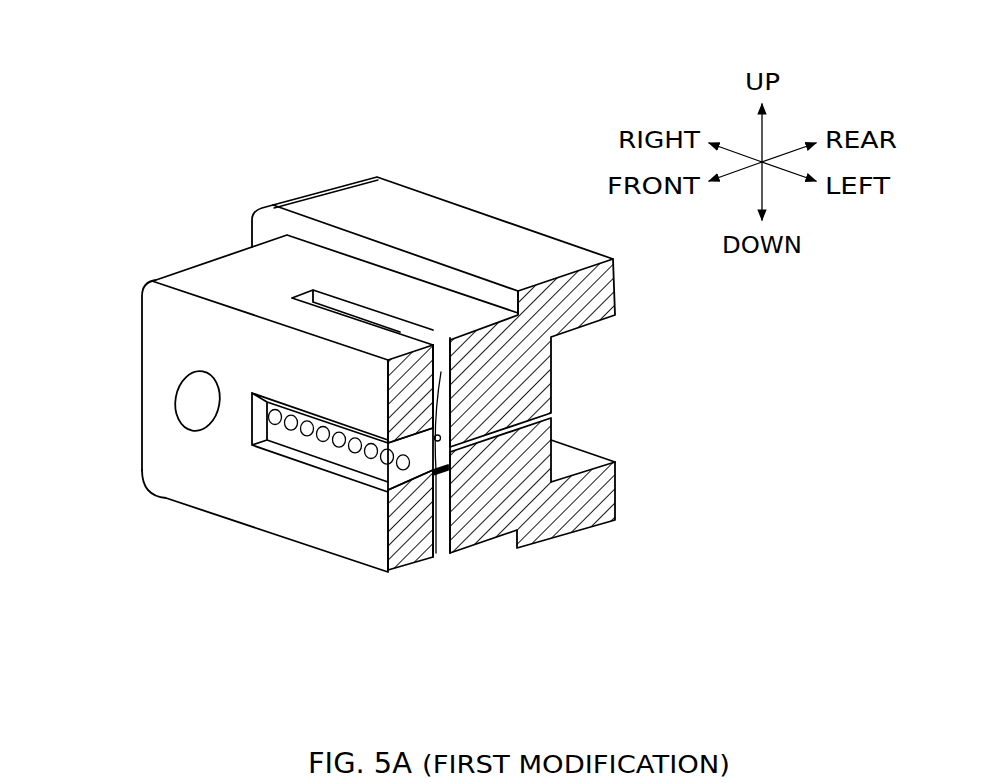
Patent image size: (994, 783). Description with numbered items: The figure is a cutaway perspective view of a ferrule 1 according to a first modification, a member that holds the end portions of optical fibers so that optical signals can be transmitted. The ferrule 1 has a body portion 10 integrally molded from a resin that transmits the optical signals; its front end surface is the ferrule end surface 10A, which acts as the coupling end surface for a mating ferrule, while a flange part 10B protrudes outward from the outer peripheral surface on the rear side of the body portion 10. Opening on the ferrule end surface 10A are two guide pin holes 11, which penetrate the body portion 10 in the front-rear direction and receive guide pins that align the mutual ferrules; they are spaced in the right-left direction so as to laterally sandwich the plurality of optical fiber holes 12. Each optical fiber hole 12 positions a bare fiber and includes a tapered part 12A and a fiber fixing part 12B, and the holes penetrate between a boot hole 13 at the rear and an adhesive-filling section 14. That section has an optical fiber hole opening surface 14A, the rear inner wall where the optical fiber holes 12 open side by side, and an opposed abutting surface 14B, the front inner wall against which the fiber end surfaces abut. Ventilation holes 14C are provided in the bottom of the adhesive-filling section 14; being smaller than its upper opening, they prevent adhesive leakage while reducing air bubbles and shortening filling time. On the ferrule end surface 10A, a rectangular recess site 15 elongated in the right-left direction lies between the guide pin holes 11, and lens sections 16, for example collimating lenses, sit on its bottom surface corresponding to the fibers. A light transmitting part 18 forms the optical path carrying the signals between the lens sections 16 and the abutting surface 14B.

The ferrule 1 is at (198, 106).
The body portion 10 is at (234, 270).
The ferrule end surface 10A is at (173, 333).
The flange part 10B is at (273, 203).
The guide pin hole 11 is at (198, 403).
The optical fiber hole 12 is at (707, 558).
The tapered part 12A is at (507, 428).
The fiber fixing part 12B is at (553, 425).
The boot hole 13 is at (612, 385).
The adhesive-filling section 14 is at (419, 320).
The optical fiber hole opening surface 14A is at (480, 428).
The abutting surface 14B is at (410, 550).
The ventilation hole 14C is at (449, 563).
The recess site 15 is at (306, 456).
The lens section 16 is at (355, 448).
The light transmitting part 18 is at (388, 558).